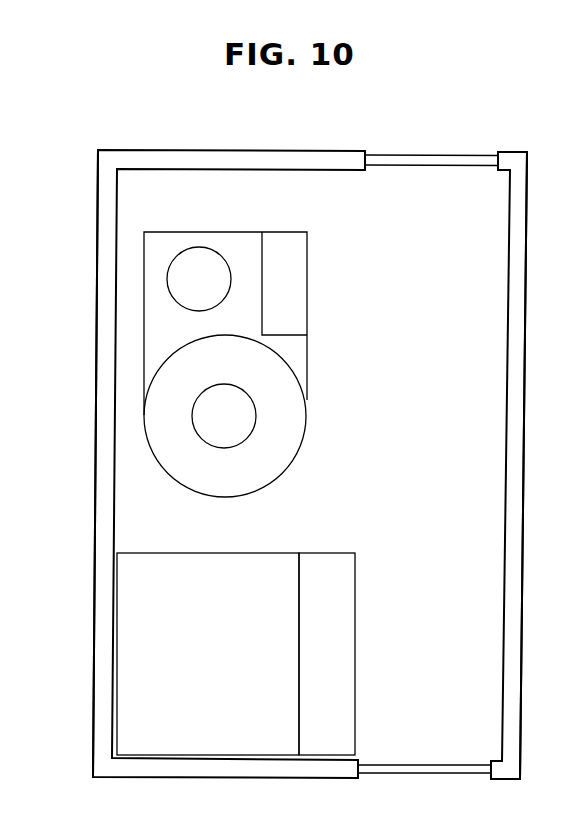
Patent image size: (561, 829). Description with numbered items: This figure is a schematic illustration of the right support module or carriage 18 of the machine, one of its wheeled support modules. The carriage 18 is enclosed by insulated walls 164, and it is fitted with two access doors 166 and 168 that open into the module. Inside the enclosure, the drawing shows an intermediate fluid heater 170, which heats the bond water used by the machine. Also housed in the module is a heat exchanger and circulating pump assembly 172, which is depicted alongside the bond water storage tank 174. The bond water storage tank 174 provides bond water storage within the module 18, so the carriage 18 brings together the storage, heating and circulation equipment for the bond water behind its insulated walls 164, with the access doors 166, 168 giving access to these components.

The right support module or carriage 18 is at (80, 139).
The insulated walls 164 is at (96, 489).
The access door 166 is at (416, 765).
The access door 168 is at (418, 167).
The intermediate fluid heater 170 is at (296, 363).
The heat exchanger and circulating pump assembly 172 is at (337, 665).
The bond water storage tank 174 is at (213, 665).